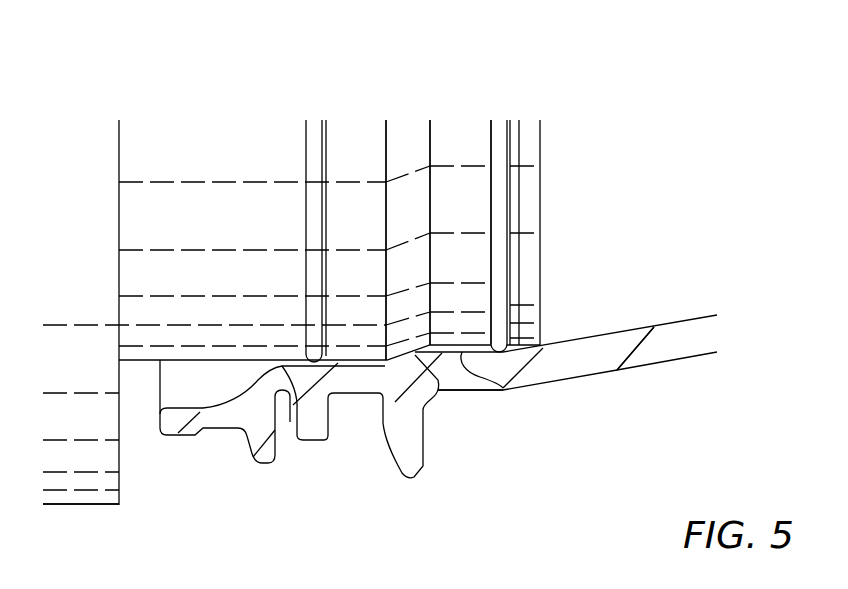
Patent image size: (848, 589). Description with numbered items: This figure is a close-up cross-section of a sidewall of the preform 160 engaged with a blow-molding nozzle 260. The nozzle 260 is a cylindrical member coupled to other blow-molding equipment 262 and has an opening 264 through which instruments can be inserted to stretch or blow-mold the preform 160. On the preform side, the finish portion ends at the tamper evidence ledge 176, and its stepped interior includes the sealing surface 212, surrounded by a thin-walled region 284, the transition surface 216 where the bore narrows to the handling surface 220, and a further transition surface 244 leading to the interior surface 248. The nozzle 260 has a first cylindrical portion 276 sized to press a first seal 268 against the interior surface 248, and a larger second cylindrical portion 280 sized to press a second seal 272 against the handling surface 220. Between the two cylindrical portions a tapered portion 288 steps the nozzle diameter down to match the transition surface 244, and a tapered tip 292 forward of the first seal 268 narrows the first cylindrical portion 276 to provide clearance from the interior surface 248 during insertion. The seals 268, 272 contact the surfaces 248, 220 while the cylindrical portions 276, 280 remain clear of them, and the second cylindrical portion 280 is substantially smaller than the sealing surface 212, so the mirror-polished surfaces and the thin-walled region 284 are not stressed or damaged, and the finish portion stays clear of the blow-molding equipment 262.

The preform 160 is at (617, 370).
The tamper evidence ledge 176 is at (412, 478).
The sealing surface 212 is at (182, 388).
The transition surface 216 is at (290, 422).
The handling surface 220 is at (347, 367).
The transition surface 244 is at (442, 388).
The interior surface 248 is at (690, 215).
The nozzle 260 is at (150, 90).
The blow-molding equipment 262 is at (70, 506).
The opening 264 is at (556, 241).
The first seal 268 is at (500, 130).
The second seal 272 is at (313, 133).
The first cylindrical portion 276 is at (463, 143).
The second cylindrical portion 280 is at (238, 230).
The thin-walled region 284 is at (183, 433).
The tapered portion 288 is at (412, 133).
The tapered tip 292 is at (530, 148).